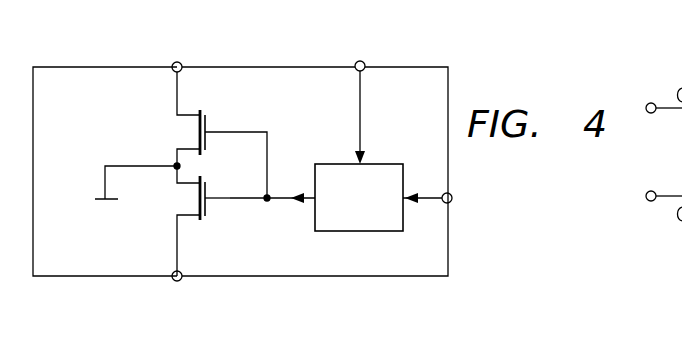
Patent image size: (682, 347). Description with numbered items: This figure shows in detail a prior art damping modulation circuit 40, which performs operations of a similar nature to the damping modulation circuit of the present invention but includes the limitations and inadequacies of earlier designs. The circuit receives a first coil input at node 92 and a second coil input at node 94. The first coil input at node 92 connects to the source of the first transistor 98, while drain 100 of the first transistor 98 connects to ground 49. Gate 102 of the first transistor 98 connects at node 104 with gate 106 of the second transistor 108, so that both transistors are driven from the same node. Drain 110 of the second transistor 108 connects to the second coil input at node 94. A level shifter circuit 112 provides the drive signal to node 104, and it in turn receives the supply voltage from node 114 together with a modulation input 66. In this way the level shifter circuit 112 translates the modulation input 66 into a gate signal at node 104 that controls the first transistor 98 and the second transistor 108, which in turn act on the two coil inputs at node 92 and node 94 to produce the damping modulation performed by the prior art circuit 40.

The damping modulation circuit 40 is at (470, 28).
The ground 49 is at (95, 200).
The modulation input 66 is at (418, 194).
The node 92 is at (174, 63).
The node 94 is at (174, 281).
The ND1 transistor 98 is at (280, 122).
The drain 100 is at (190, 148).
The gate 102 is at (268, 139).
The node 104 is at (268, 203).
The gate 106 is at (228, 192).
The ND2 transistor 108 is at (168, 212).
The drain 110 is at (176, 178).
The level shifter circuit 112 is at (385, 163).
The node 114 is at (363, 72).